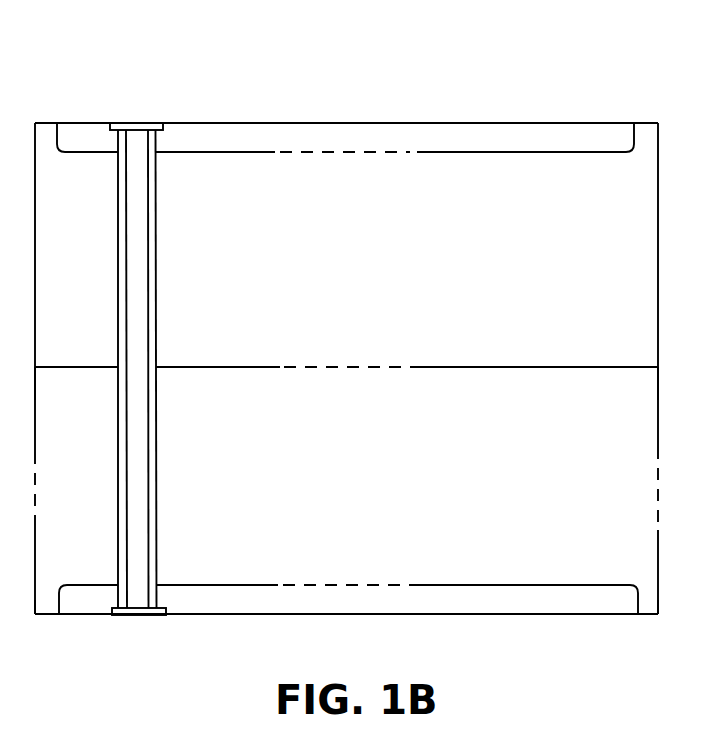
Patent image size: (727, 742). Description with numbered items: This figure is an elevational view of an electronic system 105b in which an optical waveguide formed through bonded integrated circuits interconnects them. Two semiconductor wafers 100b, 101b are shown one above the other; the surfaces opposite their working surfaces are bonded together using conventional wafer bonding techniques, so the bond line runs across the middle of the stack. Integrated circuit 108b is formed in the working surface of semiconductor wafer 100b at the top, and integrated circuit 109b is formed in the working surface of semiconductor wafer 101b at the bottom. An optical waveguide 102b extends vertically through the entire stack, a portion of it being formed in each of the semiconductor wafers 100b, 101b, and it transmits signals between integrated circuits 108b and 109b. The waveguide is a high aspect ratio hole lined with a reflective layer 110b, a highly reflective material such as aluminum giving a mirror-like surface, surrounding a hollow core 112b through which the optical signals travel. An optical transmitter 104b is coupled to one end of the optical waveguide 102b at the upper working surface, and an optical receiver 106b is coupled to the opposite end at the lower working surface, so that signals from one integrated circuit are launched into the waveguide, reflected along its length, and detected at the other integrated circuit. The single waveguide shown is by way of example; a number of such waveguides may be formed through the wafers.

The semiconductor wafer 100b is at (633, 335).
The semiconductor wafer 101b is at (637, 553).
The optical waveguide 102b is at (201, 369).
The optical transmitter 104b is at (134, 125).
The electronic system 105b is at (395, 98).
The optical receiver 106b is at (138, 617).
The integrated circuit 108b is at (493, 138).
The integrated circuit 109b is at (497, 597).
The reflective layer 110b is at (138, 198).
The hollow core 112b is at (152, 240).